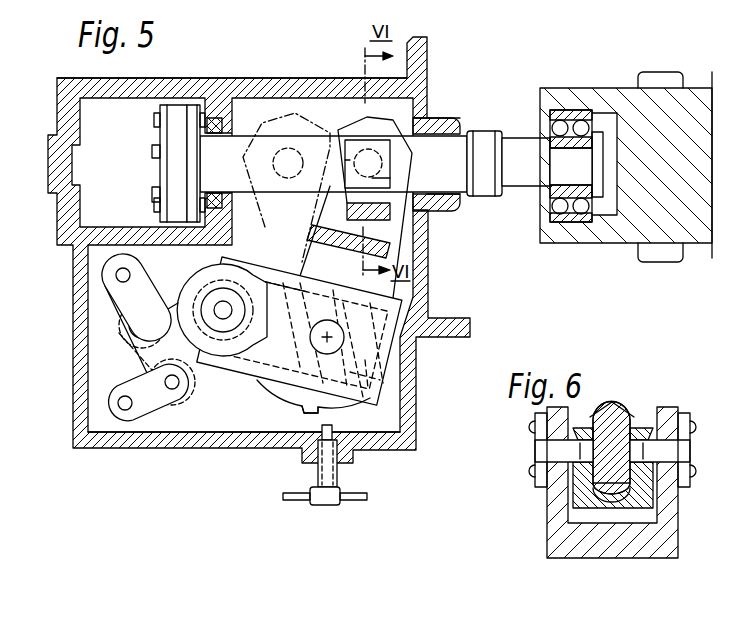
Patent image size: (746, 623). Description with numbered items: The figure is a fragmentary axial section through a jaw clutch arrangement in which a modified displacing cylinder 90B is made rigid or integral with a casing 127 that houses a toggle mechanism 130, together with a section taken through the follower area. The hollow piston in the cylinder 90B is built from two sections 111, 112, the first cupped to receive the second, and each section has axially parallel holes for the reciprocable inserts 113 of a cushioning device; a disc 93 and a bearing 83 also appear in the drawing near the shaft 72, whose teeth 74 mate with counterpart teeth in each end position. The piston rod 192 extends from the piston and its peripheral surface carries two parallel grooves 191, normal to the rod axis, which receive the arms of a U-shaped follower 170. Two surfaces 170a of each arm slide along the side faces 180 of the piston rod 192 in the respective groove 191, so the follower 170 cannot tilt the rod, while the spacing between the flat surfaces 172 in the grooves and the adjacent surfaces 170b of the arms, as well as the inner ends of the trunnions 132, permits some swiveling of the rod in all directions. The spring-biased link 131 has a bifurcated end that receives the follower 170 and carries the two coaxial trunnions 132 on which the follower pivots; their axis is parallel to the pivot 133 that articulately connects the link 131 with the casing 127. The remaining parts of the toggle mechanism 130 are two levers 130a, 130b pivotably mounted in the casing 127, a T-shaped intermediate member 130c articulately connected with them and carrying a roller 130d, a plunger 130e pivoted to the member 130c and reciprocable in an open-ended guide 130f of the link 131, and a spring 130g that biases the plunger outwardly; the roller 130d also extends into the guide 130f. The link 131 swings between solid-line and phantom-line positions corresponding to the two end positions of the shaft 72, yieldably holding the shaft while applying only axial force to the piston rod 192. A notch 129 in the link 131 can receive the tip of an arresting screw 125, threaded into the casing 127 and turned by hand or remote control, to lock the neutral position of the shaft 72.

In FIG. 5, the shaft 72 is at (607, 112).
In FIG. 5, the teeth 74 is at (658, 82).
In FIG. 5, the ball bearing 83 is at (571, 118).
In FIG. 5, the displacing cylinder 90B is at (195, 90).
In FIG. 5, the flywheel disc 93 is at (178, 113).
In FIG. 5, the piston section 111 is at (188, 222).
In FIG. 5, the piston section 112 is at (152, 189).
In FIG. 5, the reciprocable inserts 113 is at (154, 122).
In FIG. 5, the arresting screw 125 is at (337, 476).
In FIG. 5, the casing 127 is at (192, 443).
In FIG. 5, the notch 129 is at (311, 411).
In FIG. 5, the toggle mechanism 130 is at (110, 353).
In FIG. 5, the lever 130a is at (115, 290).
In FIG. 5, the lever 130b is at (143, 413).
In FIG. 5, the T-shaped intermediate member 130c is at (227, 345).
In FIG. 5, the roller 130d is at (213, 275).
In FIG. 5, the plunger 130e is at (329, 280).
In FIG. 5, the open-ended guide 130f is at (386, 400).
In FIG. 5, the spring 130g is at (378, 372).
In FIG. 5, the spring-biased link 131 is at (372, 283).
In FIG. 6, the spring-biased link 131 is at (560, 511).
In FIG. 6, the trunnions 132 is at (560, 451).
In FIG. 5, the pivot 133 is at (330, 338).
In FIG. 5, the U-shaped follower 170 is at (400, 222).
In FIG. 6, the U-shaped follower 170 is at (590, 510).
In FIG. 5, the surfaces 170a is at (347, 200).
In FIG. 6, the surfaces 170b is at (622, 470).
In FIG. 6, the flat surfaces 172 is at (610, 411).
In FIG. 5, the side faces 180 is at (390, 160).
In FIG. 5, the grooves 191 is at (470, 134).
In FIG. 5, the piston rod 192 is at (236, 157).
In FIG. 6, the piston rod 192 is at (648, 493).